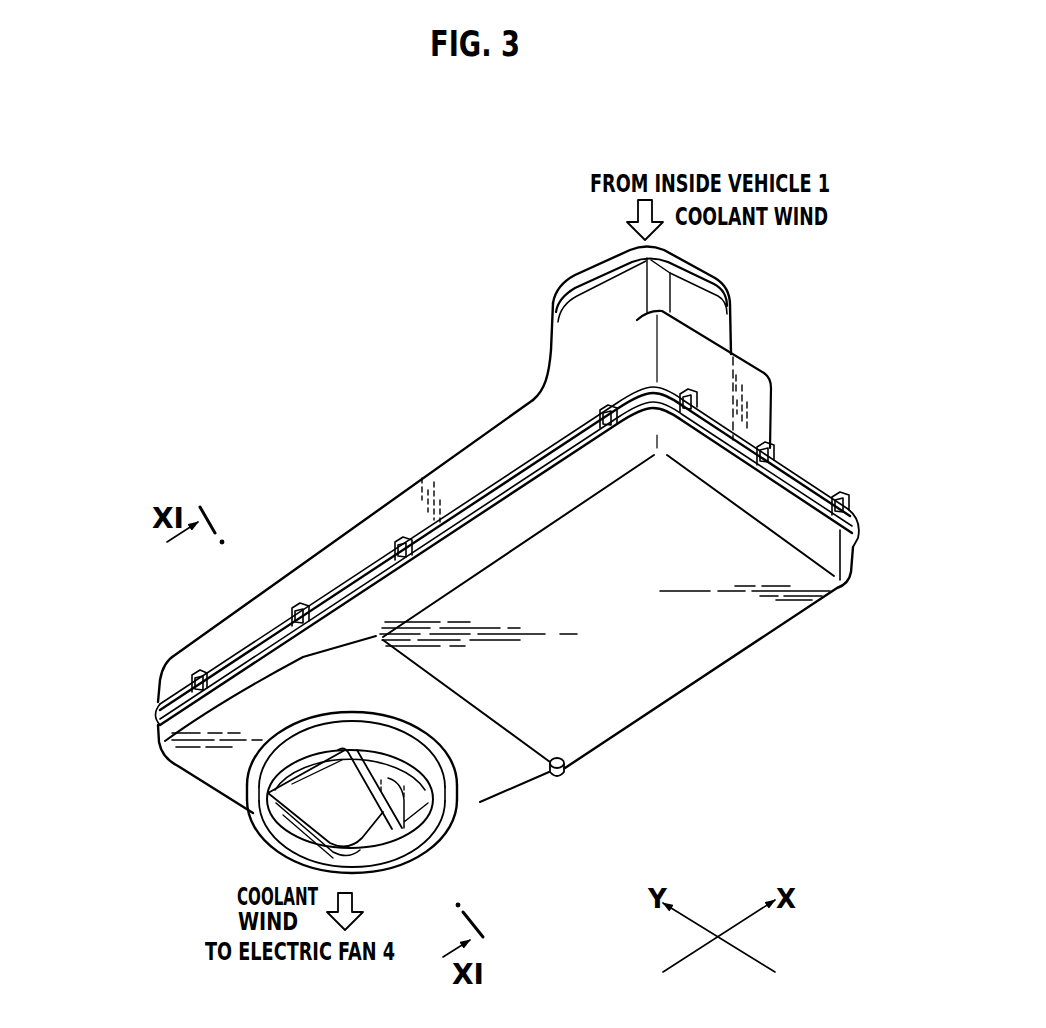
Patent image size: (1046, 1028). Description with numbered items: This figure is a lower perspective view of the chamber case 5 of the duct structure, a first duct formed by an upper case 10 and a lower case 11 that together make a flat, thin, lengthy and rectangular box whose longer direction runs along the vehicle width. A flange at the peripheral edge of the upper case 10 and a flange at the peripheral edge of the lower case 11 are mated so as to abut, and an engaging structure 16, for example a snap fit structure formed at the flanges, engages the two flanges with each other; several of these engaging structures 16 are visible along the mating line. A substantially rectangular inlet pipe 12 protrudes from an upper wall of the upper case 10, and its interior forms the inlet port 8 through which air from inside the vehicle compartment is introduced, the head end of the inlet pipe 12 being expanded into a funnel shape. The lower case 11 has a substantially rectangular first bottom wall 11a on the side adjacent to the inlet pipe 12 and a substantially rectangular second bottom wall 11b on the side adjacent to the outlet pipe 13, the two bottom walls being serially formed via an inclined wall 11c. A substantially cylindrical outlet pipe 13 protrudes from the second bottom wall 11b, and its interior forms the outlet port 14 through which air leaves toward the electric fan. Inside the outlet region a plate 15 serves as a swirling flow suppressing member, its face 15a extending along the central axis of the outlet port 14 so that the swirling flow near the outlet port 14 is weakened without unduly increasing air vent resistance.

The chamber case 5 is at (365, 338).
The inlet port 8 is at (592, 256).
The upper case 10 is at (178, 650).
The lower case 11 is at (182, 774).
The first bottom wall 11a is at (717, 632).
The second bottom wall 11b is at (200, 755).
The inclined wall 11c is at (525, 770).
The inlet pipe 12 is at (538, 345).
The outlet pipe 13 is at (257, 838).
The outlet port 14 is at (383, 895).
The plate 15 is at (395, 832).
The face 15a is at (415, 800).
The engaging structure 16 is at (395, 548).